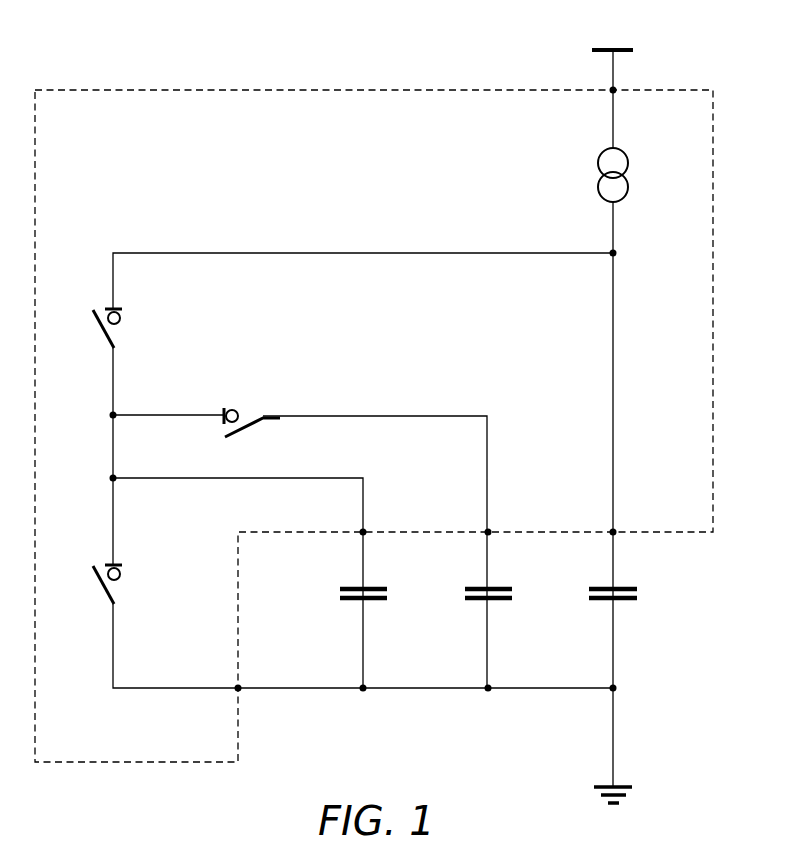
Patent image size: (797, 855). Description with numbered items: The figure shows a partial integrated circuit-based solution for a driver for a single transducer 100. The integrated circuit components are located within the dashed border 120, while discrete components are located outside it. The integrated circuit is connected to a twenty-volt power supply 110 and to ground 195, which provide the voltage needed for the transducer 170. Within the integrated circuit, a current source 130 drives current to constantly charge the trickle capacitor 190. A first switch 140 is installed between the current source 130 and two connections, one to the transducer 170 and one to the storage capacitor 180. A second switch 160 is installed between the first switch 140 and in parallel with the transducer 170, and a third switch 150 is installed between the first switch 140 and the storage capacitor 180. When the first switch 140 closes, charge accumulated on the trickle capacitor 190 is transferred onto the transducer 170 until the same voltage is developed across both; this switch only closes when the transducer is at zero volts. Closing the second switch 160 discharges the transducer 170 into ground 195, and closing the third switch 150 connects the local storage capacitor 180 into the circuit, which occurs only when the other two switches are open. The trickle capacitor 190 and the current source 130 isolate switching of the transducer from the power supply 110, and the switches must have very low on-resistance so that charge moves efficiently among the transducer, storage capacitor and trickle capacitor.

The driver for a single transducer 100 is at (88, 54).
The power supply 110 is at (634, 50).
The dashed border 120 is at (692, 84).
The current source G1 130 is at (600, 175).
The first switch S1 140 is at (104, 337).
The third switch S3 150 is at (246, 428).
The second switch S2 160 is at (104, 594).
The transducer C1 170 is at (372, 586).
The storage capacitor C2 180 is at (497, 586).
The trickle capacitor C3 190 is at (622, 586).
The ground 195 is at (633, 787).